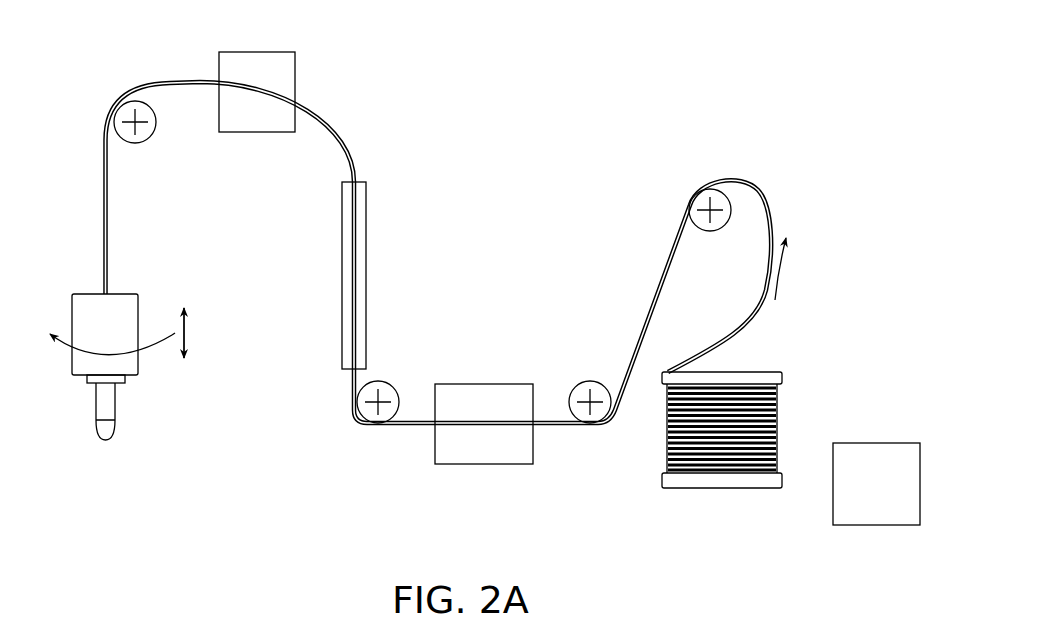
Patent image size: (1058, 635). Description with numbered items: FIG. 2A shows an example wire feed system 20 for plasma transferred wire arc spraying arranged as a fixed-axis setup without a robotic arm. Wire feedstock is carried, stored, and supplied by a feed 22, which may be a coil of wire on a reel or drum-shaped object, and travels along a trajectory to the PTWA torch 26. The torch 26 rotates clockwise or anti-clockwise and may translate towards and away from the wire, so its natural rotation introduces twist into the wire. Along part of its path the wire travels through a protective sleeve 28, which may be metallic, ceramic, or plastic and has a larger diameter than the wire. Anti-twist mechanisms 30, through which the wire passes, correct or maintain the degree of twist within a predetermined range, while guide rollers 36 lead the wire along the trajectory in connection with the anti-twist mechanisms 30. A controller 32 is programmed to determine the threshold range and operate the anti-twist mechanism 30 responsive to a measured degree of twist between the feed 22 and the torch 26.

The wire feed system 20 is at (684, 40).
The feed 22 is at (768, 370).
The PTWA torch 26 is at (140, 377).
The protective sleeve 28 is at (368, 226).
The anti-twist mechanism 30 is at (246, 50).
The controller 32 is at (876, 442).
The guide roller 36 is at (150, 142).